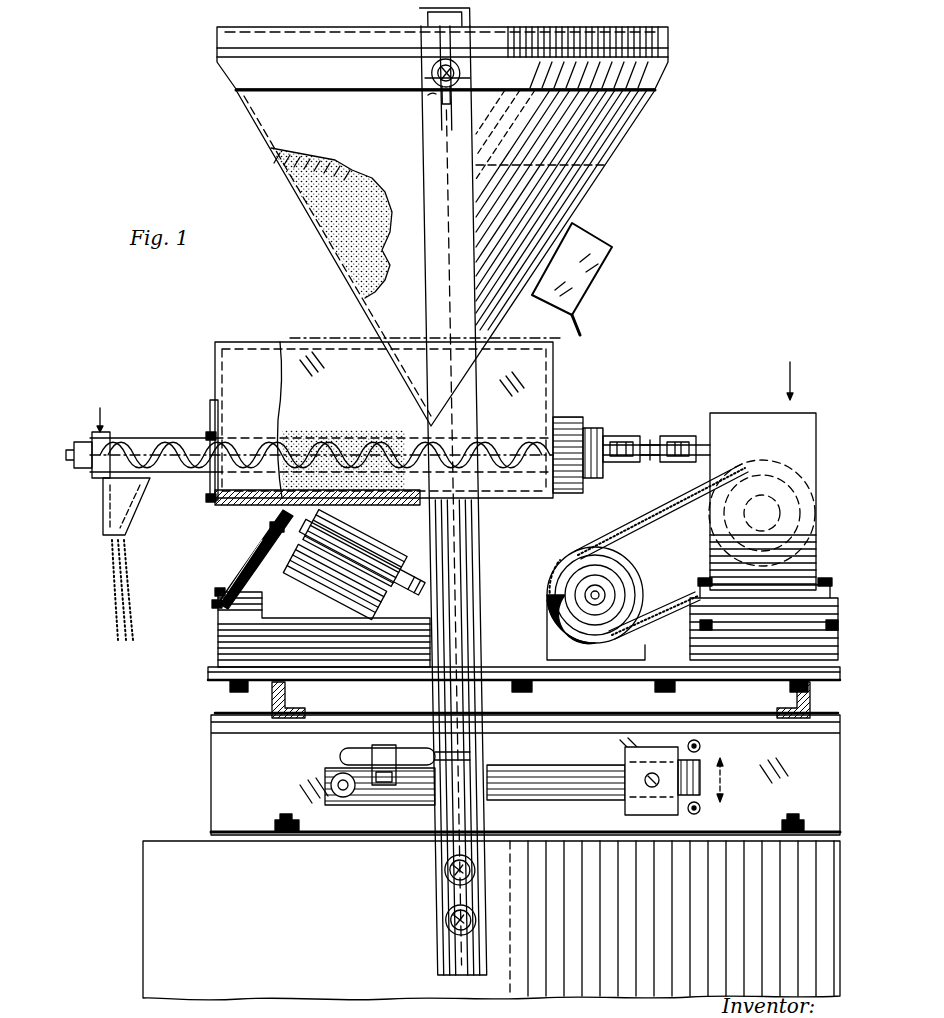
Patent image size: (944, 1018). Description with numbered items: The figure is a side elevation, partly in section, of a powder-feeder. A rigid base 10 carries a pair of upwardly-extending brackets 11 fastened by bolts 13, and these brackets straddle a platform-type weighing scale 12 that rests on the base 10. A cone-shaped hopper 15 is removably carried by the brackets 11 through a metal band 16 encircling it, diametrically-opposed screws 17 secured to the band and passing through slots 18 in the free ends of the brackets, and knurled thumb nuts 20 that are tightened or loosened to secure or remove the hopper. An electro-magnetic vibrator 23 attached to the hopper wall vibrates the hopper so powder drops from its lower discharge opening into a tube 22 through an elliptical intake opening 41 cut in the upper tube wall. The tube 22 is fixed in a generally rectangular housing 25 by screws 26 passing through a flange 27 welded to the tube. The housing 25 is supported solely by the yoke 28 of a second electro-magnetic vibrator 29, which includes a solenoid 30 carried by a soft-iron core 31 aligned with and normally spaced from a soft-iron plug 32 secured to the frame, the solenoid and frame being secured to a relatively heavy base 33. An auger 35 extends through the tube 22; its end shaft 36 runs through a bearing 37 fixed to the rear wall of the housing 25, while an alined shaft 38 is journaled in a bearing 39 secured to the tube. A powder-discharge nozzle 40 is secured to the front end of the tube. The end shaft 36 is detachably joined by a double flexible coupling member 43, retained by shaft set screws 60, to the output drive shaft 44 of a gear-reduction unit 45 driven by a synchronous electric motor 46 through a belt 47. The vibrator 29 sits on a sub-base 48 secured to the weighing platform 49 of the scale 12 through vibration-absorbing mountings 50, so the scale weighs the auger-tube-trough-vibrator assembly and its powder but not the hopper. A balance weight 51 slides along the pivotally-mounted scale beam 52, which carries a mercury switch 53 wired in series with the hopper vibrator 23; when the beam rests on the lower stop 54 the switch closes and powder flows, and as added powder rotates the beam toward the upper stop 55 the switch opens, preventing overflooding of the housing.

The rigid base 10 is at (143, 918).
The upwardly-extending brackets 11 is at (426, 283).
The platform-type weighing scale 12 is at (205, 792).
The bolts 13 is at (430, 920).
The cone-shaped hopper 15 is at (618, 168).
The metal band 16 is at (668, 70).
The screws 17 is at (428, 95).
The slots 18 is at (440, 92).
The knurled thumb nuts 20 is at (425, 80).
The tube 22 is at (215, 500).
The electro-magnetic vibrator 23 is at (612, 265).
The housing 25 is at (215, 345).
The screws 26 is at (206, 436).
The flange 27 is at (212, 430).
The yoke 28 is at (260, 548).
The electro-magnetic vibrator 29 is at (215, 630).
The solenoid 30 is at (395, 548).
The soft-iron core 31 is at (337, 557).
The soft-iron plug 32 is at (252, 562).
The base 33 is at (208, 662).
The auger 35 is at (163, 438).
The end shaft 36 is at (596, 428).
The bearing 37 is at (568, 417).
The alined shaft 38 is at (80, 440).
The bearing 39 is at (103, 432).
The powder-discharge nozzle 40 is at (103, 500).
The intake opening 41 is at (302, 430).
The double flexible coupling member 43 is at (648, 436).
The output drive shaft 44 is at (700, 438).
The gear-reduction unit 45 is at (795, 430).
The synchronous electric motor 46 is at (560, 565).
The belt 47 is at (680, 582).
The sub-base 48 is at (208, 682).
The weighing platform 49 is at (215, 733).
The vibration-absorbing mountings 50 is at (305, 705).
The balance weight 51 is at (632, 800).
The scale beam 52 is at (575, 800).
The mercury switch 53 is at (345, 750).
The lower stop 54 is at (702, 808).
The upper stop 55 is at (702, 746).
The shaft set screws 60 is at (630, 462).